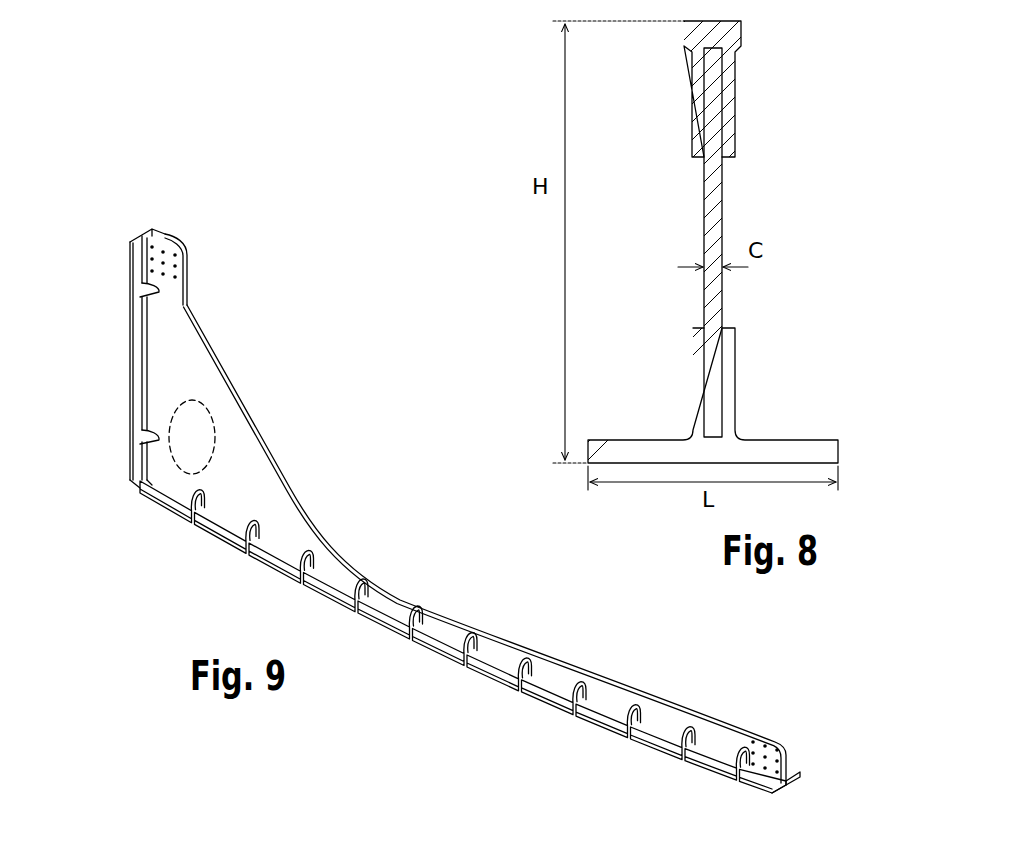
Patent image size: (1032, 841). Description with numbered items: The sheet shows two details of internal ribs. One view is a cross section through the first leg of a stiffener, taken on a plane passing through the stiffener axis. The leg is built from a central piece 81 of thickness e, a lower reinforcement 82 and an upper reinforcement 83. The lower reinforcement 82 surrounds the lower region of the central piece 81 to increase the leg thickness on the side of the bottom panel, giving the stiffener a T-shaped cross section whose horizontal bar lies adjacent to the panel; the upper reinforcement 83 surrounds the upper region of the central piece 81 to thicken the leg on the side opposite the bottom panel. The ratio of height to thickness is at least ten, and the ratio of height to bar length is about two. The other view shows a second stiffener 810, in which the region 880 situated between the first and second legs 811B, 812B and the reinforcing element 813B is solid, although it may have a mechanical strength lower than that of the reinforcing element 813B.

In FIG. 8, the central piece 81 is at (712, 208).
In FIG. 8, the lower reinforcement 82 is at (778, 452).
In FIG. 8, the upper reinforcement 83 is at (726, 72).
In FIG. 9, the second stiffener 810 is at (266, 340).
In FIG. 9, the first leg 811B is at (498, 662).
In FIG. 9, the second leg 812B is at (165, 404).
In FIG. 9, the reinforcing element 813B is at (228, 452).
In FIG. 9, the region 880 is at (202, 428).